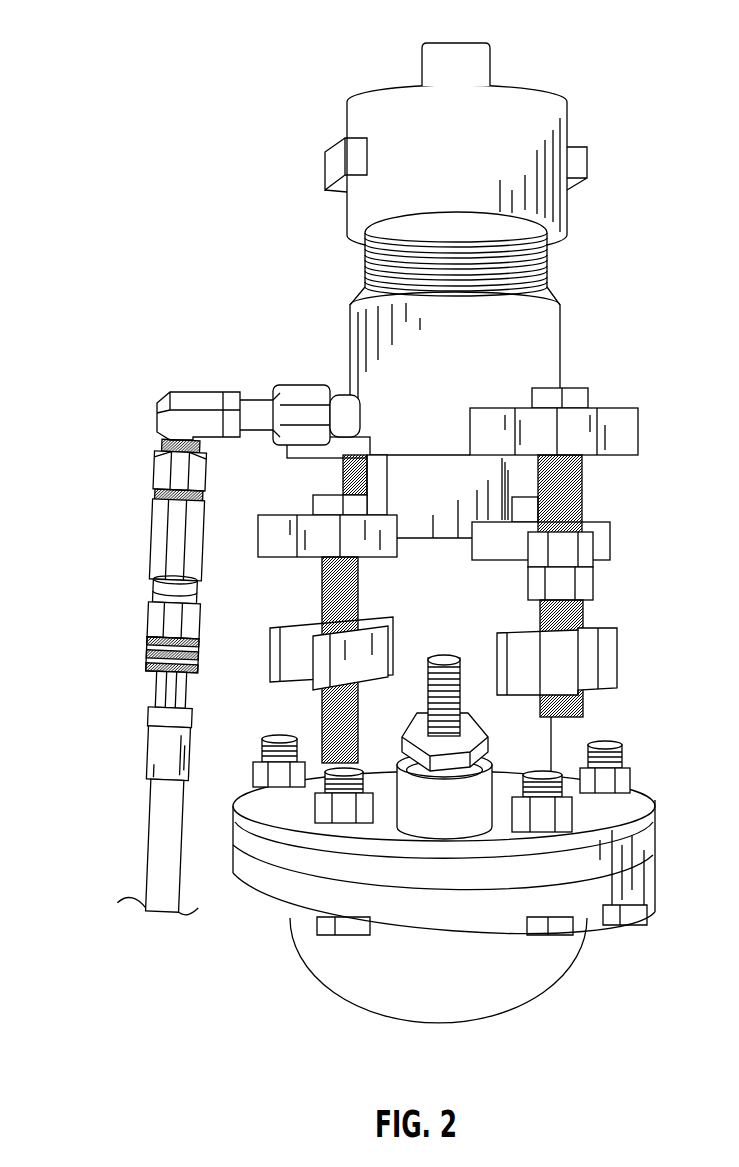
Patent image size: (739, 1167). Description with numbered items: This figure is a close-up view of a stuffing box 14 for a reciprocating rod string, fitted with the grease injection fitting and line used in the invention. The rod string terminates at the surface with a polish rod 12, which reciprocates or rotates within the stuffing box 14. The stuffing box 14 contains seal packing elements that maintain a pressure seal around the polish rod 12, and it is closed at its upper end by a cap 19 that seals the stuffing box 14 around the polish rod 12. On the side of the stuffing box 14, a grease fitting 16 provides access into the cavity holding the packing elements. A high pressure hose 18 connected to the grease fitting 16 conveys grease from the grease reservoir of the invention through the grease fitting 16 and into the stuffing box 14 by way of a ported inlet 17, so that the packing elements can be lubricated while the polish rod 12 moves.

The polish rod 12 is at (466, 50).
The cap 19 is at (567, 128).
The stuffing box 14 is at (593, 332).
The grease fitting 16 is at (301, 376).
The ported inlet 17 is at (341, 392).
The high pressure hose 18 is at (126, 793).